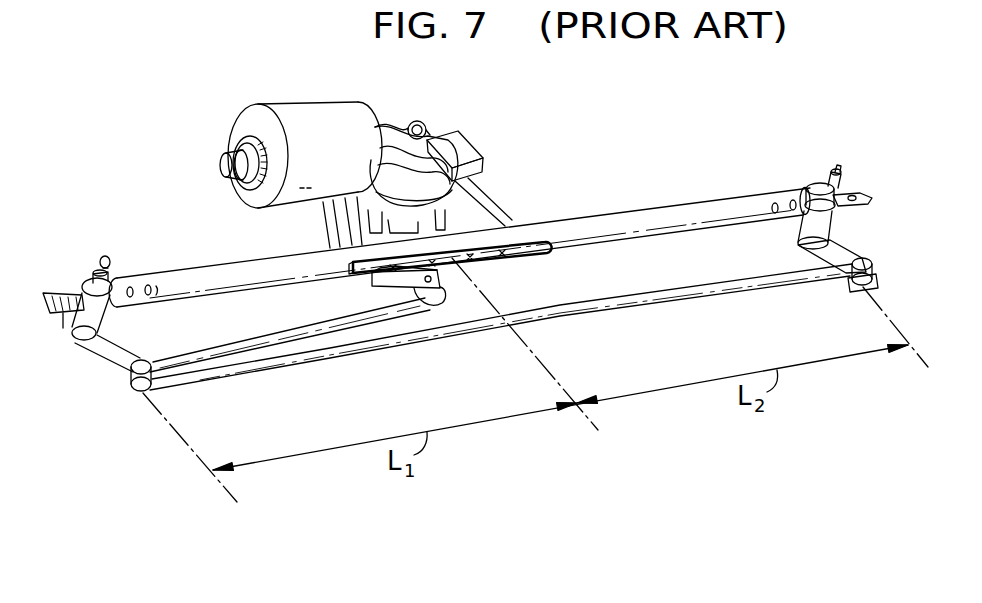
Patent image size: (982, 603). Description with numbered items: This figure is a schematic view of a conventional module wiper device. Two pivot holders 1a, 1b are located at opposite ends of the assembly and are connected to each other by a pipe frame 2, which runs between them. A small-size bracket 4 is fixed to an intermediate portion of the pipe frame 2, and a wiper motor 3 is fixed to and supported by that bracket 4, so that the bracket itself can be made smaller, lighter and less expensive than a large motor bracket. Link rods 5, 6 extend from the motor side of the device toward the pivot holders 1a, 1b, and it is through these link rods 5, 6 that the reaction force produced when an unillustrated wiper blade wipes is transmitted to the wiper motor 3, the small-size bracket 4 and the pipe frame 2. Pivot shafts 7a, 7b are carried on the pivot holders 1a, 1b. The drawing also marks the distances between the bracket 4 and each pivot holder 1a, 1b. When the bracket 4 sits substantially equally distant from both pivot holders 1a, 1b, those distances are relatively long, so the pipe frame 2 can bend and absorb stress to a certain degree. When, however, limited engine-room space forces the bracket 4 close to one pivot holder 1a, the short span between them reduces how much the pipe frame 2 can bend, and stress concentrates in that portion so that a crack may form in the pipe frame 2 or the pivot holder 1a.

The pipe frame 2 is at (630, 222).
The wiper motor 3 is at (313, 122).
The small-size bracket 4 is at (472, 223).
The link rod 5 is at (627, 302).
The link rod 6 is at (383, 310).
The pivot shaft 7a is at (822, 182).
The pivot shaft 7b is at (85, 275).
The pivot holder 1a is at (828, 233).
The pivot holder 1b is at (70, 343).